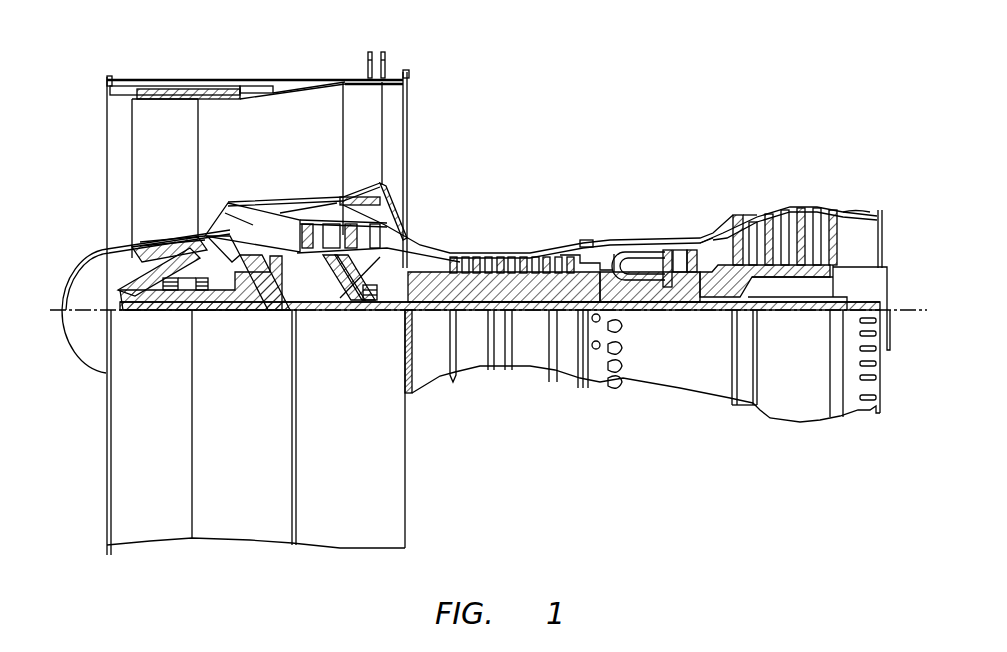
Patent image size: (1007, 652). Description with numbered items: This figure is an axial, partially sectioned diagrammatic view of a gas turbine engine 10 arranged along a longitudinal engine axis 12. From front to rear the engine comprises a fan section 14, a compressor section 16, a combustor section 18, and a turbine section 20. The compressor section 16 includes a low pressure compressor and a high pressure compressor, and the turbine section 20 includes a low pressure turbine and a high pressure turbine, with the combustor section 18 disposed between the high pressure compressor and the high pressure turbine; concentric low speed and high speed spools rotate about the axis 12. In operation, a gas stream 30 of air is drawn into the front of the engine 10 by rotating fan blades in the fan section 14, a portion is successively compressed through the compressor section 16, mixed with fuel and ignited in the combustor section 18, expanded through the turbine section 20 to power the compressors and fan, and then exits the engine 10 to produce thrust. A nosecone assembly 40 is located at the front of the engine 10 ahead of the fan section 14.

The gas turbine engine 10 is at (622, 81).
The longitudinal engine axis 12 is at (924, 315).
The fan section 14 is at (282, 62).
The compressor section 16 is at (278, 170).
The combustor section 18 is at (614, 170).
The turbine section 20 is at (850, 170).
The gas stream 30 is at (91, 200).
The nosecone assembly 40 is at (70, 350).